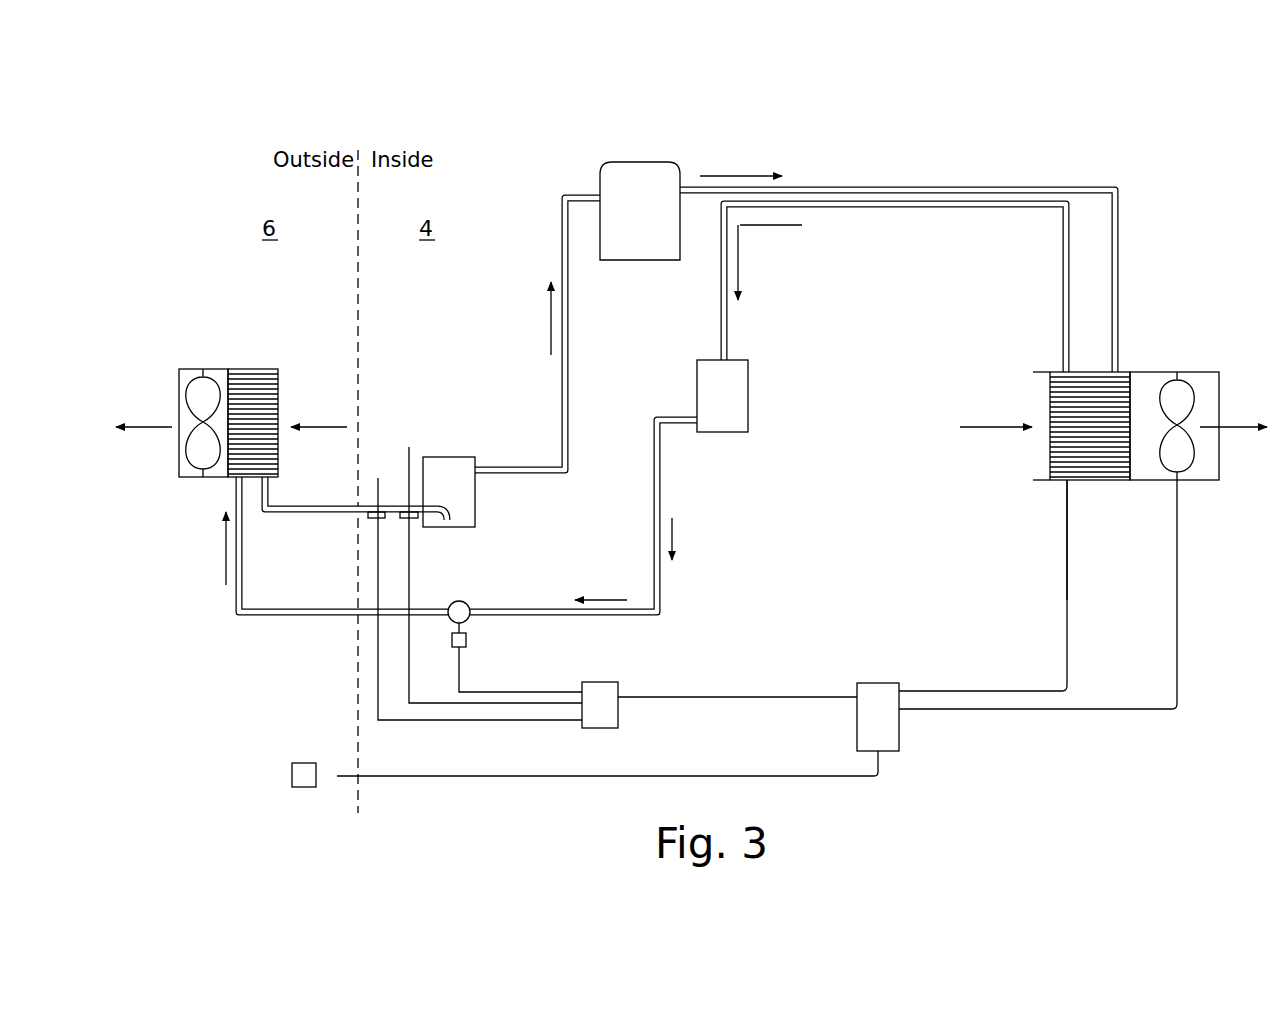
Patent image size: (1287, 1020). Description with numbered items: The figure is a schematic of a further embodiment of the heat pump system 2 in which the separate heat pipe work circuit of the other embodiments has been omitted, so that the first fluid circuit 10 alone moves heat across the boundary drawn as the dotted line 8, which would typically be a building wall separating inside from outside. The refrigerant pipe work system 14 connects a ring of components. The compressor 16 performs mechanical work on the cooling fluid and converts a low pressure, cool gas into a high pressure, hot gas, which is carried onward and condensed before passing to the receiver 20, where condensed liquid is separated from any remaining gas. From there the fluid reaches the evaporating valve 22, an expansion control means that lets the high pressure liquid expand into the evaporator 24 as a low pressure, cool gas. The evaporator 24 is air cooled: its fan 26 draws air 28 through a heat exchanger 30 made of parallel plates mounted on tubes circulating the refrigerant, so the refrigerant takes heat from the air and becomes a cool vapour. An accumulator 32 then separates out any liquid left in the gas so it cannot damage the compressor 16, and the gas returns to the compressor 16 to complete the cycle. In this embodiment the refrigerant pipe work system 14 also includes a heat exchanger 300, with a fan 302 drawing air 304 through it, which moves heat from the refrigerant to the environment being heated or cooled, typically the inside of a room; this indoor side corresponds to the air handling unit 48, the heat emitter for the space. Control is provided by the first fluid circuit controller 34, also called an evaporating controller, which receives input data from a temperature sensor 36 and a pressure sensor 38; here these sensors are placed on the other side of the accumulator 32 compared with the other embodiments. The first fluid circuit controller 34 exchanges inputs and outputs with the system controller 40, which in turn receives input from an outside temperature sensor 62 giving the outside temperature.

The system 2 is at (1153, 206).
The dotted line 8 is at (358, 274).
The first fluid circuit 10 is at (570, 146).
The refrigerant pipe work system 14 is at (569, 336).
The compressor 16 is at (651, 226).
The receiver 20 is at (736, 408).
The evaporating valve 22 is at (459, 601).
The evaporator 24 is at (211, 378).
The fan 26 is at (200, 399).
The air 28 is at (146, 428).
The heat exchanger 30 is at (279, 392).
The accumulator 32 is at (452, 460).
The first fluid circuit controller 34 is at (618, 690).
The temperature sensor 36 is at (487, 562).
The pressure sensor 38 is at (472, 586).
The system controller 40 is at (891, 729).
The air handling unit 48 is at (1094, 481).
The outside temperature sensor 62 is at (292, 768).
The heat exchanger 300 is at (1061, 412).
The fan 302 is at (1179, 399).
The air 304 is at (983, 428).